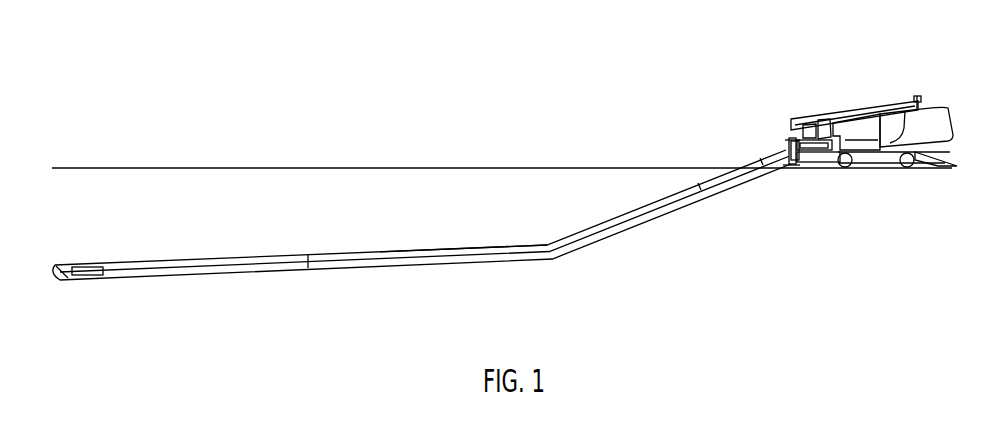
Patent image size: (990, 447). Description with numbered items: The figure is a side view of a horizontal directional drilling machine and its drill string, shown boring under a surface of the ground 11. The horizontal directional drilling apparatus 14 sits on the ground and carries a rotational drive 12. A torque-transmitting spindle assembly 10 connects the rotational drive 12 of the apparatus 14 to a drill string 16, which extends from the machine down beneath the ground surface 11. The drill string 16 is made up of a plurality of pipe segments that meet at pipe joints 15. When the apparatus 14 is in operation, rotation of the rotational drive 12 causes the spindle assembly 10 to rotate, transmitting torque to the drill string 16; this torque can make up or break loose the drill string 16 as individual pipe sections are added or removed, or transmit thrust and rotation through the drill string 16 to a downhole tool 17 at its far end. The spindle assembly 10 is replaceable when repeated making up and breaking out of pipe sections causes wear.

The spindle assembly 10 is at (819, 192).
The surface of the ground 11 is at (502, 140).
The rotational drive 12 is at (753, 134).
The horizontal directional drilling apparatus 14 is at (874, 108).
The pipe joints 15 is at (423, 235).
The drill string 16 is at (463, 222).
The downhole tool 17 is at (107, 242).